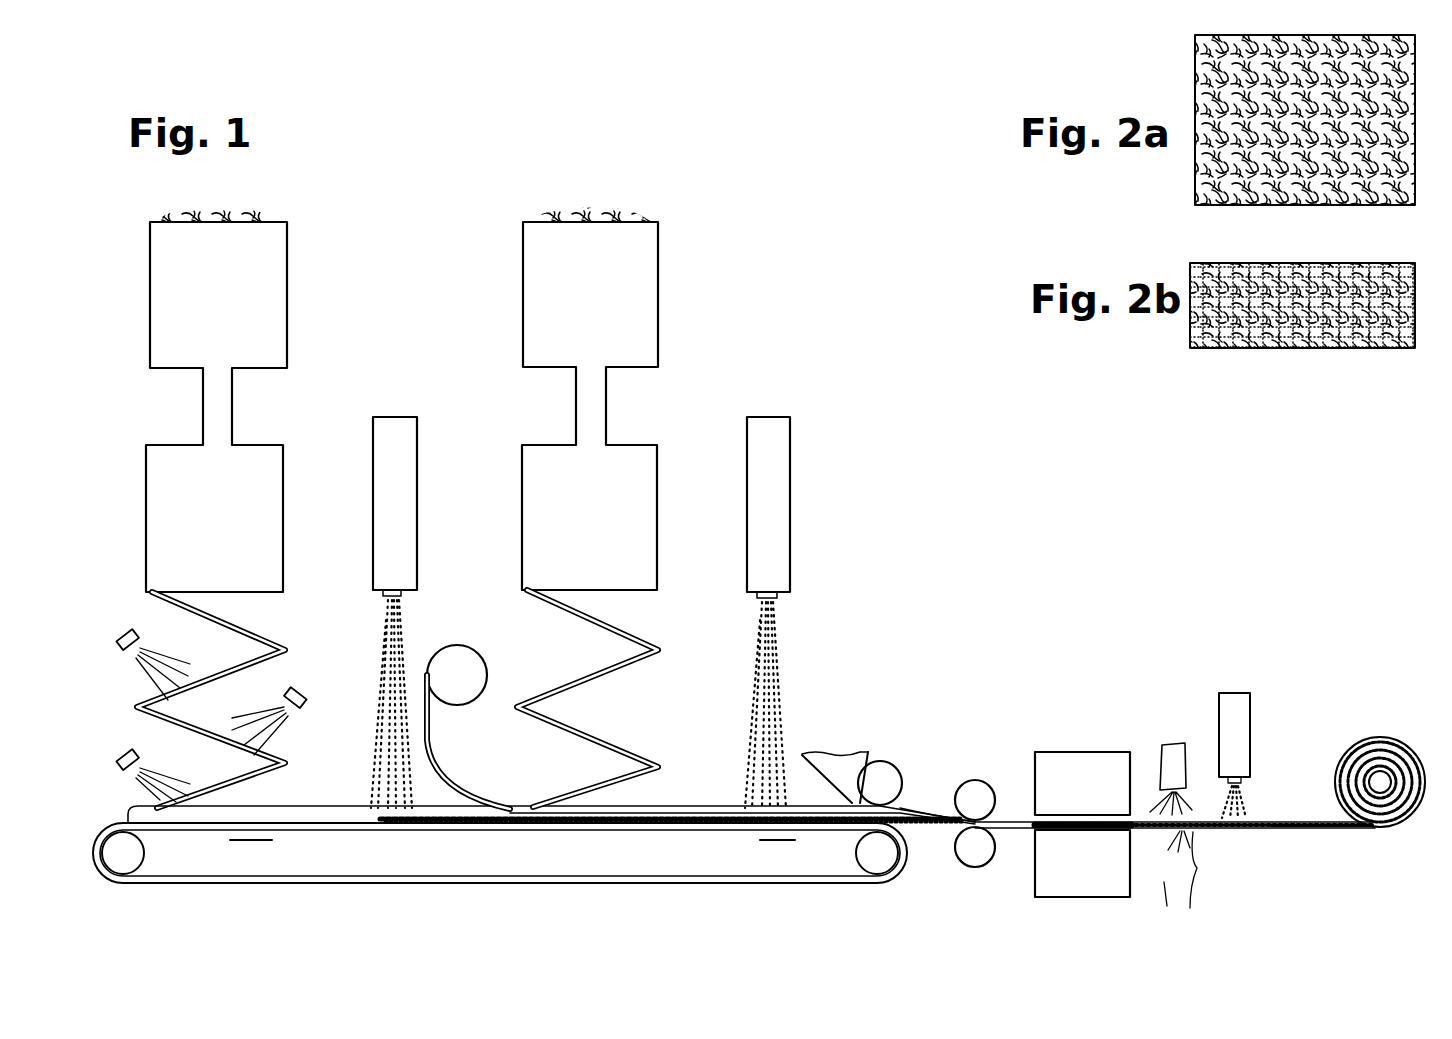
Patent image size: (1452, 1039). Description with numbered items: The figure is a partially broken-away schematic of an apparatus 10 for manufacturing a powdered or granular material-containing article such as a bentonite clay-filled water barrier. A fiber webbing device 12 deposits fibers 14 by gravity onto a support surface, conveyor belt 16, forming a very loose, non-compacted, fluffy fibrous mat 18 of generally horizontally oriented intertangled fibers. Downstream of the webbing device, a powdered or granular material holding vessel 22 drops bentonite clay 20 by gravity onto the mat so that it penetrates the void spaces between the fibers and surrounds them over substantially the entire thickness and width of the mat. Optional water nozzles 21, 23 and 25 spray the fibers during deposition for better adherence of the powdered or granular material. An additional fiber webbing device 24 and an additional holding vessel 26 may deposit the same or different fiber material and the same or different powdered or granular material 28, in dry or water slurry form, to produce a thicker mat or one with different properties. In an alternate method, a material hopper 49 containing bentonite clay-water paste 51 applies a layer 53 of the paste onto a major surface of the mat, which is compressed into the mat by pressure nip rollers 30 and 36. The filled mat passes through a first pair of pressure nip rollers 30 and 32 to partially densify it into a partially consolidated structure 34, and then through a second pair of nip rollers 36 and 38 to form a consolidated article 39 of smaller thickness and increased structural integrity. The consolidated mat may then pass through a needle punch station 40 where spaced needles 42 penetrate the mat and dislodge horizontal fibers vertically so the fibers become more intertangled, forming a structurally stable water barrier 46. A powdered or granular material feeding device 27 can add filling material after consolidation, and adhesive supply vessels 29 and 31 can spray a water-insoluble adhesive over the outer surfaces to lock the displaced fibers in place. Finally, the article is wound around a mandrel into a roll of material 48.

The apparatus 10 is at (123, 306).
The fiber webbing device 12 is at (162, 512).
The fibers 14 is at (262, 211).
The conveyor belt 16 is at (622, 212).
The fibrous mat 18 is at (268, 805).
The bentonite clay 20 is at (398, 630).
The water nozzle 21 is at (122, 651).
The powdered or granular material holding vessel 22 is at (378, 437).
The water nozzle 23 is at (118, 752).
The additional fiber webbing device 24 is at (645, 514).
The water nozzle 25 is at (292, 690).
The additional powdered or granular material holding vessel 26 is at (785, 503).
The powdered or granular material feeding device 27 is at (1219, 727).
The powdered or granular material 28 is at (768, 650).
The adhesive supply vessel 29 is at (540, 886).
The pressure nip roller 30 is at (885, 770).
The adhesive supply vessel 31 is at (1195, 870).
The pressure nip roller 32 is at (885, 866).
The partially consolidated structure 34 is at (935, 800).
The nip roller 36 is at (982, 798).
The nip roller 38 is at (980, 858).
The consolidated article 39 is at (1038, 824).
The needle punch station 40 is at (1072, 746).
The needles 42 is at (1125, 838).
The water barrier 46 is at (1283, 816).
The roll of material 48 is at (1395, 746).
The material hopper 49 is at (800, 764).
The bentonite clay-water paste 51 is at (840, 768).
The layer of bentonite paste 53 is at (920, 800).